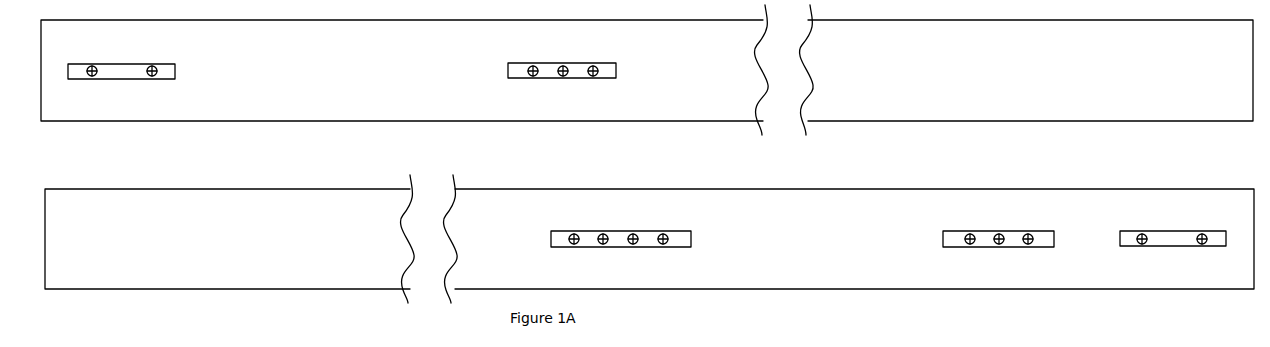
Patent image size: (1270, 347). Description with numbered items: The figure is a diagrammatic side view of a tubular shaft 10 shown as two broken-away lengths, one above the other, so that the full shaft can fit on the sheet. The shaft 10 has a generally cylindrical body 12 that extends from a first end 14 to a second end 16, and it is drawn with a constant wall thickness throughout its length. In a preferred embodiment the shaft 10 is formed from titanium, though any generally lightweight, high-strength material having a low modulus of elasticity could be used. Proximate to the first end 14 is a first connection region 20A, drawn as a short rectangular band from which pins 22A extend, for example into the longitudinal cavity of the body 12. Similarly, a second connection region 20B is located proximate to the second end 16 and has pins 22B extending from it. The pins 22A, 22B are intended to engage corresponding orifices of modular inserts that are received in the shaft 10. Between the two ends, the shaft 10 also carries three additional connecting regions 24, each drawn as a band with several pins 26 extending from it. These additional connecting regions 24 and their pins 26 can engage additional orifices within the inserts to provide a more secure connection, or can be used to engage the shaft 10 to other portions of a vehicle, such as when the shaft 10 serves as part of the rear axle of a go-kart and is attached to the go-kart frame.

The tubular shaft 10 is at (680, 300).
The generally cylindrical body 12 is at (425, 107).
The first end 14 is at (63, 110).
The second end 16 is at (1234, 282).
The first connection region 20A is at (127, 77).
The second connection region 20B is at (1173, 243).
The pins 22A is at (92, 77).
The pins 22B is at (1140, 234).
The additional connecting regions 24 is at (520, 78).
The pins 26 is at (540, 78).